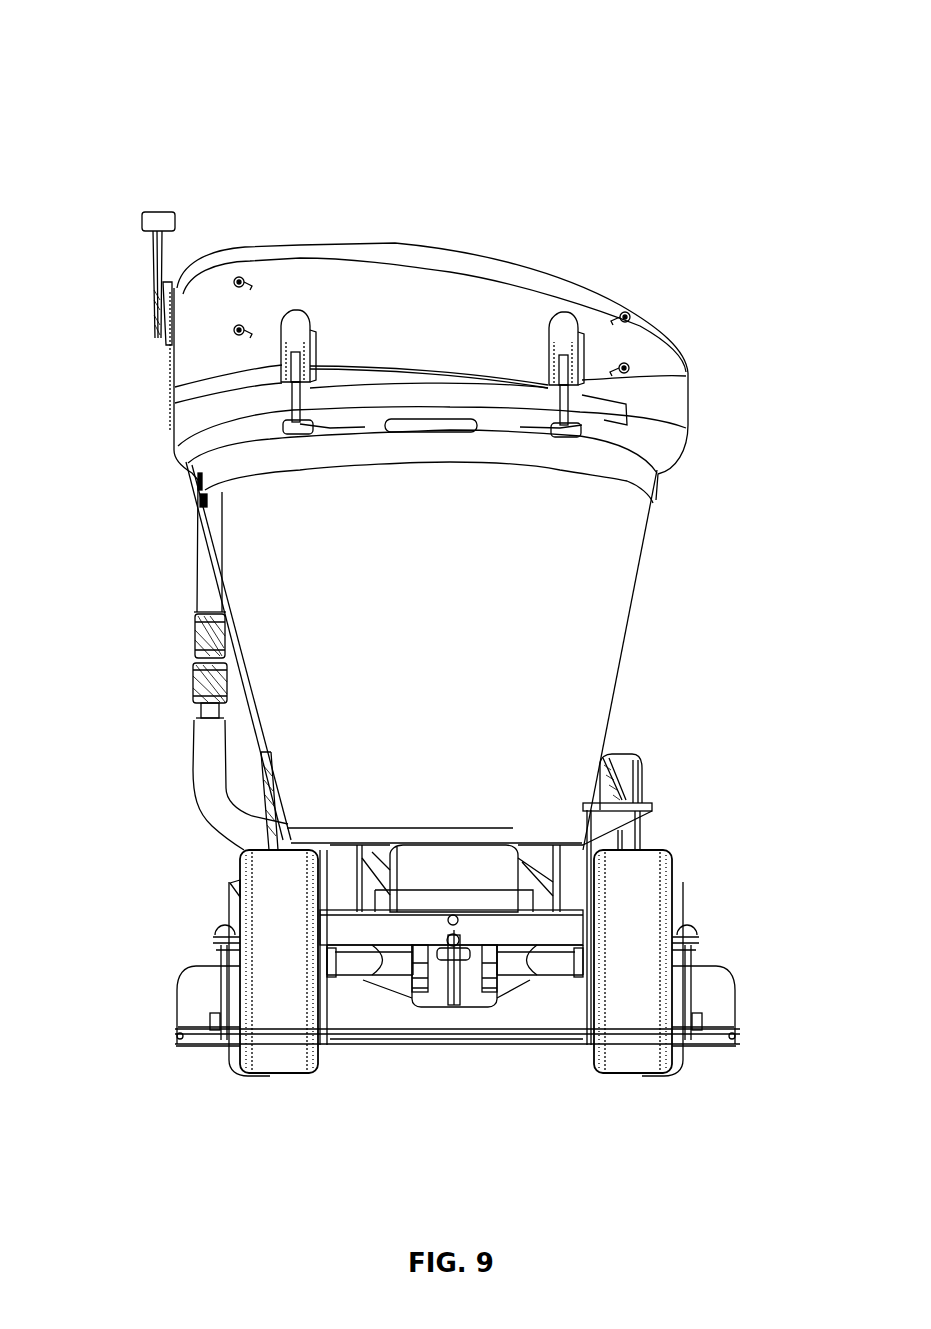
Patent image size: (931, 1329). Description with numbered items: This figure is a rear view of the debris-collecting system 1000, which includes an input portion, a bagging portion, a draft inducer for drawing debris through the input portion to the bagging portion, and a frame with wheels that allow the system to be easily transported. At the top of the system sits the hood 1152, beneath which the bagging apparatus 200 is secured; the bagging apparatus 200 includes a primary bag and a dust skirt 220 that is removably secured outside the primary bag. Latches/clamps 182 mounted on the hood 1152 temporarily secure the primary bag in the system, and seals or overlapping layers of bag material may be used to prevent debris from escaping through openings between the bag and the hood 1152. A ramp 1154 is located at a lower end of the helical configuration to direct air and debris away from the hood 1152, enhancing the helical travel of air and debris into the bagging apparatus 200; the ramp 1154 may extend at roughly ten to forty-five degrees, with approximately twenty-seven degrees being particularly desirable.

The debris-collecting system 1000 is at (664, 84).
The hood 1152 is at (439, 232).
The latches/clamps 182 is at (294, 318).
The ramp 1154 is at (158, 420).
The bagging apparatus 200 is at (617, 548).
The dust skirt 220 is at (458, 641).